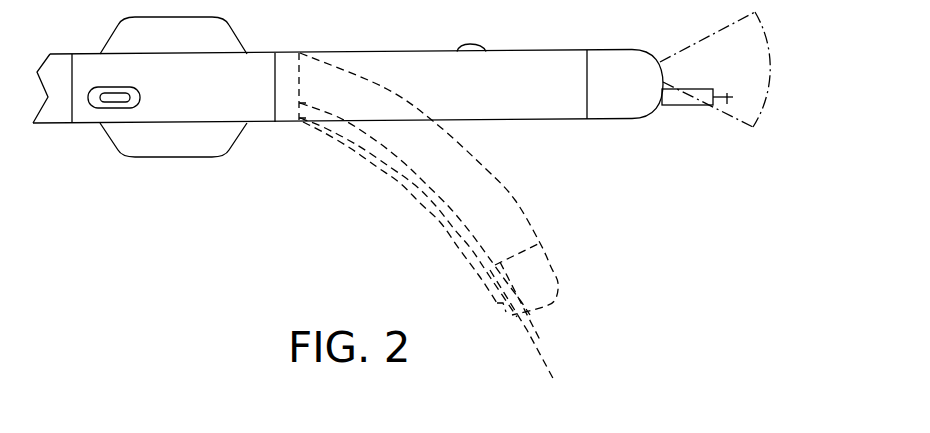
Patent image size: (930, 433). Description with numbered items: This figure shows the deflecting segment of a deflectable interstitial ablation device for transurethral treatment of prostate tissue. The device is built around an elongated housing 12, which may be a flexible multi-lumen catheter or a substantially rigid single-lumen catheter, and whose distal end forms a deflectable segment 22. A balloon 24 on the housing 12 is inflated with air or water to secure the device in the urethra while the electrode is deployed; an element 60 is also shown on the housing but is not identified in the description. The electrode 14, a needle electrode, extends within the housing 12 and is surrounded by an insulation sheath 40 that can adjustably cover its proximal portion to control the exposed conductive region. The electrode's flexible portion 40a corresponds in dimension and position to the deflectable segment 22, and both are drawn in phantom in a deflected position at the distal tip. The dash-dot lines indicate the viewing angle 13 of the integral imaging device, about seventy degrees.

The elongated housing 12 is at (298, 53).
The viewing angle 13 is at (772, 56).
The electrode 14 is at (727, 105).
The deflectable segment 22 is at (459, 98).
The balloon 24 is at (188, 46).
The insulation sheath 40 is at (680, 106).
The flexible portion 40a is at (472, 241).
The slot 60 is at (140, 97).